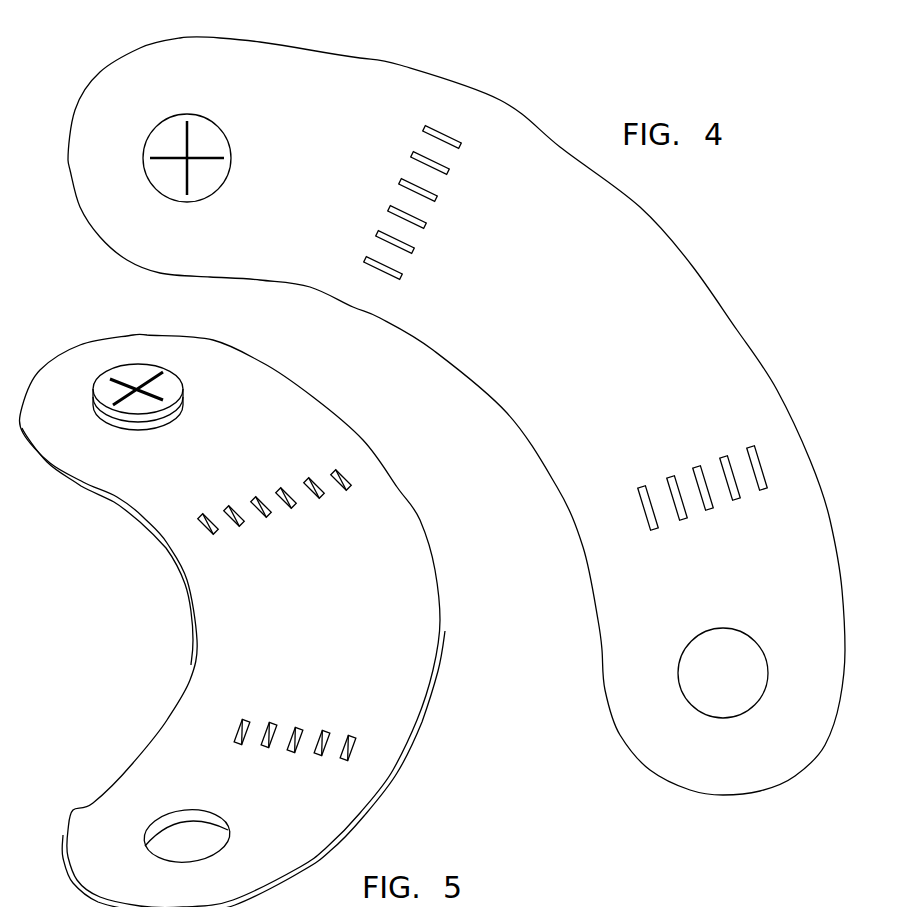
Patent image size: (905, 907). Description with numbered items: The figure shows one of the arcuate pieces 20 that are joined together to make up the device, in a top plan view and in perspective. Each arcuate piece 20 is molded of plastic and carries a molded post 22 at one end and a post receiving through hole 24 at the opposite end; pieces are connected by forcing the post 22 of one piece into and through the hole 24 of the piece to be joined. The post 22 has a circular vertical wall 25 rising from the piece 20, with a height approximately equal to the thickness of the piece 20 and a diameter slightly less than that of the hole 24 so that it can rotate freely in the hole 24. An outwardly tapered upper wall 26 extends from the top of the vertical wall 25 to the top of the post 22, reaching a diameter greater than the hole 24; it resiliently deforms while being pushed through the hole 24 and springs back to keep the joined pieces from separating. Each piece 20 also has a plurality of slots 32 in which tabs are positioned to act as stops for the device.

In FIG. 4, the arcuate piece 20 is at (683, 278).
In FIG. 5, the arcuate piece 20 is at (143, 500).
In FIG. 4, the molded post 22 is at (205, 137).
In FIG. 5, the molded post 22 is at (140, 372).
In FIG. 4, the post receiving through hole 24 is at (720, 647).
In FIG. 5, the post receiving through hole 24 is at (212, 833).
In FIG. 5, the circular vertical wall 25 is at (183, 412).
In FIG. 5, the tapered upper wall 26 is at (157, 414).
In FIG. 5, the slots 32 is at (352, 493).